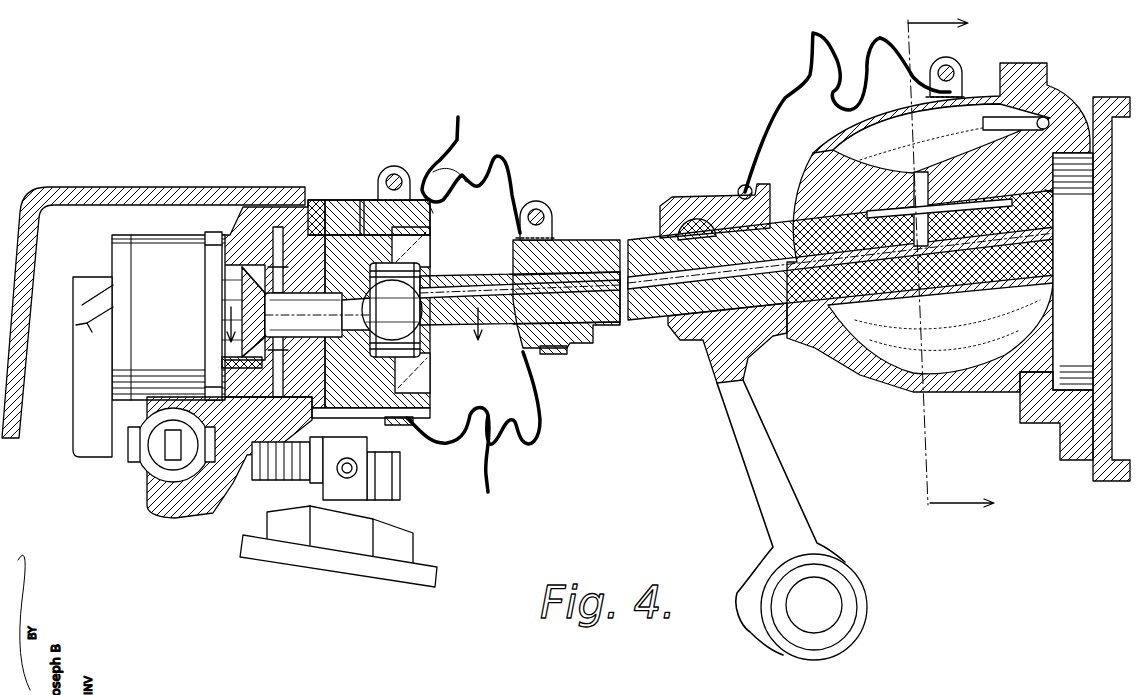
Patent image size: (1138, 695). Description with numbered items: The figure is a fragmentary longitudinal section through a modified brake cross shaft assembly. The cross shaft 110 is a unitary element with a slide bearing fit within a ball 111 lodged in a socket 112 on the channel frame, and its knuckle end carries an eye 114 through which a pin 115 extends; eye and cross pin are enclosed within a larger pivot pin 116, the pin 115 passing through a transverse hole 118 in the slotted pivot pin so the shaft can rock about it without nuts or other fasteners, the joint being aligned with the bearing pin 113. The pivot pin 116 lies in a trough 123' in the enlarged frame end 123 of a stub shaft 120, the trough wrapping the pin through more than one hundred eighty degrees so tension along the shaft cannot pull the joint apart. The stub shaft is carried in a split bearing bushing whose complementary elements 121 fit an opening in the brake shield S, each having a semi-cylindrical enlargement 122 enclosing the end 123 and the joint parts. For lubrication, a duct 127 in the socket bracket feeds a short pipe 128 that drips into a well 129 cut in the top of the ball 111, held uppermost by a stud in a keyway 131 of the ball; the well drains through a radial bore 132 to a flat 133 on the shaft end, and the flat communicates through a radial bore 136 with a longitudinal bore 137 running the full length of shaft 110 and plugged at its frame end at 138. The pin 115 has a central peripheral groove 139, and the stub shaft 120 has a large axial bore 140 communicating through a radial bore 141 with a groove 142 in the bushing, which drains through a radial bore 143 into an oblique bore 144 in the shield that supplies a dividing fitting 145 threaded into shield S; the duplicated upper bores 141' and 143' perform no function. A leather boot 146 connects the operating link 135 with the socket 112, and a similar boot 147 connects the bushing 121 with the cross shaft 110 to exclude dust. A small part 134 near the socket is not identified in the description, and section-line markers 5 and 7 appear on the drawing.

The split bearing bushing elements 121 is at (238, 212).
The stub shaft 120 is at (318, 206).
The trough 123' is at (369, 199).
The semi-cylindrical enlargement 122 is at (362, 205).
The enlarged frame end of stub shaft 123 is at (404, 170).
The upper radial bore in bushing 143' is at (173, 346).
The radial bore in bushing 143 is at (187, 316).
The upper radial bore in stub shaft 141' is at (207, 312).
The oblique bore 144 is at (222, 360).
The section line 5- 5 is at (354, 310).
The axial bore 140 is at (318, 315).
The pivot pin 116 is at (420, 275).
The pin 115 is at (422, 340).
The transverse hole 118 is at (420, 268).
The central peripheral groove 139 is at (433, 278).
The flexible boot 147 is at (498, 157).
The eye 114 is at (405, 437).
The radial bore in stub shaft 141 is at (382, 432).
The pin 134 is at (696, 212).
The cross shaft 110 is at (657, 322).
The longitudinal bore 137 is at (710, 270).
The operating link 135 is at (793, 521).
The ball 111 is at (853, 200).
The radial bore 136 is at (940, 239).
The flat 133 is at (912, 210).
The plug 138 is at (1050, 262).
The keyway 131 is at (1023, 313).
The socket 112 is at (1033, 417).
The duct 127 is at (1047, 120).
The radial bore 132 is at (1040, 112).
The short pipe 128 is at (997, 96).
The leather flexible boot 146 is at (812, 72).
The well 129 is at (870, 45).
The section line 7- 7 is at (943, 257).
The shield S is at (200, 507).
The dividing fitting 145 is at (347, 487).
The groove 142 is at (352, 483).
The bearing pin 113 is at (317, 557).